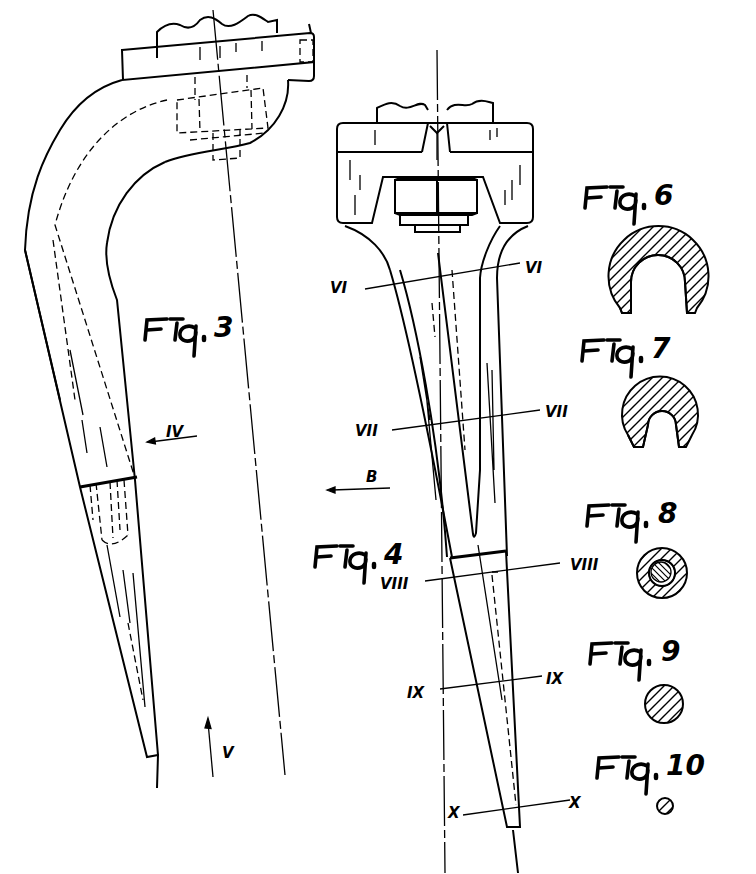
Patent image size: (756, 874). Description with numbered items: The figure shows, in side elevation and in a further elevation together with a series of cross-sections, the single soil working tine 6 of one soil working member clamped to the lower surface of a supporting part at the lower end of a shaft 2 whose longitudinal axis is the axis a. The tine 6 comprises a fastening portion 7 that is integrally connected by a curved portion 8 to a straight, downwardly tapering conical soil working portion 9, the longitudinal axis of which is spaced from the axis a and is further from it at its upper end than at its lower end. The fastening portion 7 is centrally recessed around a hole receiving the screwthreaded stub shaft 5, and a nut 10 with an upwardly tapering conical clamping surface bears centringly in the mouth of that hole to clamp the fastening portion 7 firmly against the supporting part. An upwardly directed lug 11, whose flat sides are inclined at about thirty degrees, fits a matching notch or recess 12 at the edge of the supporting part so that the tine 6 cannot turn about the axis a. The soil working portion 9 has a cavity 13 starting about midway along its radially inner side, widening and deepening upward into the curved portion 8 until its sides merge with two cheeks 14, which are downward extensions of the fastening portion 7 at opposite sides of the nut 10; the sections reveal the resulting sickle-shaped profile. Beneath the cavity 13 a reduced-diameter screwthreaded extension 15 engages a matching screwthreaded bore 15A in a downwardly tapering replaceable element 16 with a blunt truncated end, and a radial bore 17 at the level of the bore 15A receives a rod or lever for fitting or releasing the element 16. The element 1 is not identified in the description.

In FIG. 3, the clamping bracket 1 is at (122, 58).
In FIG. 4, the clamping bracket 1 is at (527, 140).
In FIG. 3, the shaft 2 is at (163, 31).
In FIG. 4, the shaft 2 is at (490, 108).
In FIG. 3, the stub shaft 5 is at (243, 150).
In FIG. 4, the stub shaft 5 is at (452, 232).
In FIG. 3, the soil working tine 6 is at (98, 194).
In FIG. 4, the soil working tine 6 is at (477, 384).
In FIG. 3, the fastening portion 7 is at (318, 75).
In FIG. 3, the curved portion 8 is at (68, 120).
In FIG. 6, the curved portion 8 is at (697, 243).
In FIG. 7, the curved portion 8 is at (690, 397).
In FIG. 3, the soil working portion 9 is at (58, 430).
In FIG. 4, the soil working portion 9 is at (400, 378).
In FIG. 6, the soil working portion 9 is at (600, 286).
In FIG. 7, the soil working portion 9 is at (608, 430).
In FIG. 3, the nut 10 is at (218, 147).
In FIG. 4, the nut 10 is at (450, 205).
In FIG. 3, the lug 11 is at (318, 48).
In FIG. 4, the lug 11 is at (447, 142).
In FIG. 3, the notch or recess 12 is at (312, 25).
In FIG. 4, the notch or recess 12 is at (432, 112).
In FIG. 3, the cavity 13 is at (100, 292).
In FIG. 4, the cavity 13 is at (420, 322).
In FIG. 6, the cavity 13 is at (687, 290).
In FIG. 7, the cavity 13 is at (673, 438).
In FIG. 3, the cheeks 14 is at (277, 98).
In FIG. 4, the cheeks 14 is at (340, 194).
In FIG. 3, the screwthreaded extension 15 is at (140, 497).
In FIG. 8, the screwthreaded extension 15 is at (676, 564).
In FIG. 3, the screwthreaded bore 15A is at (88, 527).
In FIG. 3, the replaceable element 16 is at (112, 605).
In FIG. 4, the replaceable element 16 is at (491, 750).
In FIG. 8, the replaceable element 16 is at (638, 585).
In FIG. 9, the replaceable element 16 is at (645, 701).
In FIG. 10, the replaceable element 16 is at (658, 813).
In FIG. 3, the radial bore 17 is at (85, 500).
In FIG. 8, the radial bore 17 is at (661, 551).
In FIG. 3, the axis a is at (238, 256).
In FIG. 4, the axis a is at (437, 727).